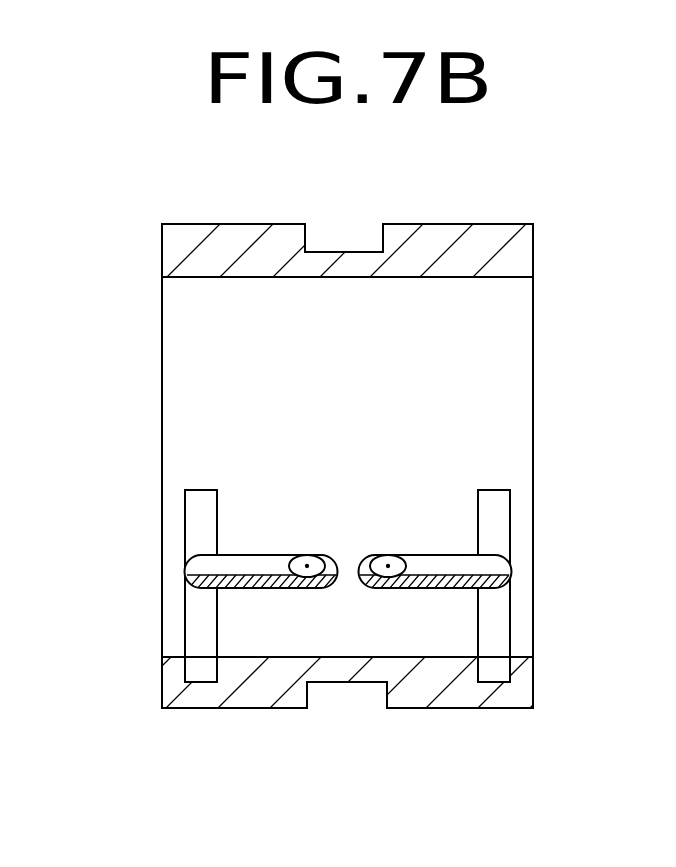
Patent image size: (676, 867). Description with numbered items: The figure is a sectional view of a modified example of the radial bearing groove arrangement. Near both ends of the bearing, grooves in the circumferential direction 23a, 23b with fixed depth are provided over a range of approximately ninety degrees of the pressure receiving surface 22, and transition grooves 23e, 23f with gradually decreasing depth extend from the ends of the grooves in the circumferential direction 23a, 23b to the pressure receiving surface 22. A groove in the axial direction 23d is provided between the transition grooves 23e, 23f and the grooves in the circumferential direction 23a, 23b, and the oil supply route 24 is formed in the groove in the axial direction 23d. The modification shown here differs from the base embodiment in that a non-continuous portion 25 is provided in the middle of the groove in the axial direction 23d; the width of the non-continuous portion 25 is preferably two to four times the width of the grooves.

The pressure receiving surface 22 is at (323, 653).
The groove in the circumferential direction 23a is at (142, 618).
The groove in the circumferential direction 23b is at (497, 628).
The groove in the axial direction 23d is at (448, 568).
The transition groove 23e is at (200, 519).
The transition groove 23f is at (495, 515).
The oil supply route 24 is at (388, 553).
The non-continuous portion 25 is at (346, 566).